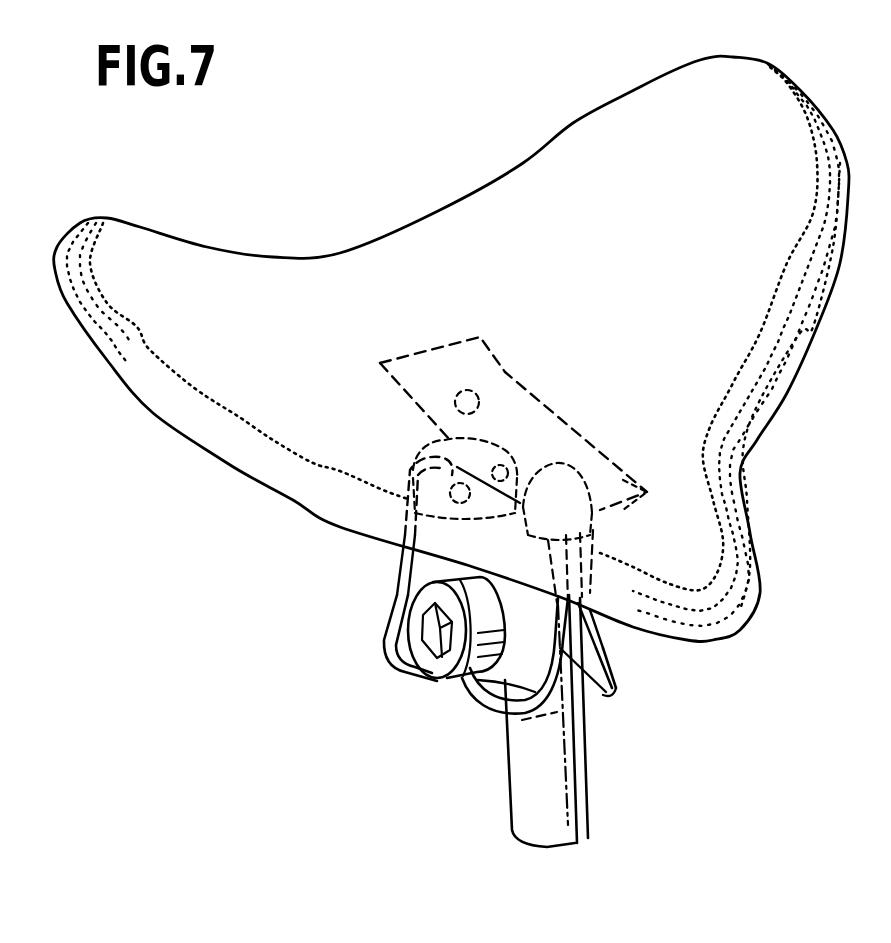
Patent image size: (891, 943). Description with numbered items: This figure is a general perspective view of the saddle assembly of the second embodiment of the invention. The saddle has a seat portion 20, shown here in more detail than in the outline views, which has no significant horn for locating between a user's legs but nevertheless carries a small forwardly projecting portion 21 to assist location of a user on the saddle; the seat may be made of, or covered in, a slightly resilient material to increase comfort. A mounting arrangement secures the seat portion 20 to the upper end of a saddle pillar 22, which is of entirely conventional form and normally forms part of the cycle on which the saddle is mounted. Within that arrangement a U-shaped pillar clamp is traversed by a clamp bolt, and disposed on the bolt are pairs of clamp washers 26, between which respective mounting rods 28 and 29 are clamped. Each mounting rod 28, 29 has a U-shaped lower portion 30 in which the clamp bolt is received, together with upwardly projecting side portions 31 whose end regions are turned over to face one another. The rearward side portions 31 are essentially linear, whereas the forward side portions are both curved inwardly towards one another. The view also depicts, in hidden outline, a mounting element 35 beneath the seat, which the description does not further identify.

The seat portion 20 is at (437, 214).
The forwardly projecting portion 21 is at (747, 542).
The saddle pillar 22 is at (553, 787).
The clamp washers 26 is at (450, 667).
The mounting rod 28 is at (390, 640).
The mounting rod 29 is at (613, 700).
The U-shaped lower portion 30 is at (462, 680).
The side portions 31 is at (398, 580).
The mounting plate 35 is at (514, 383).